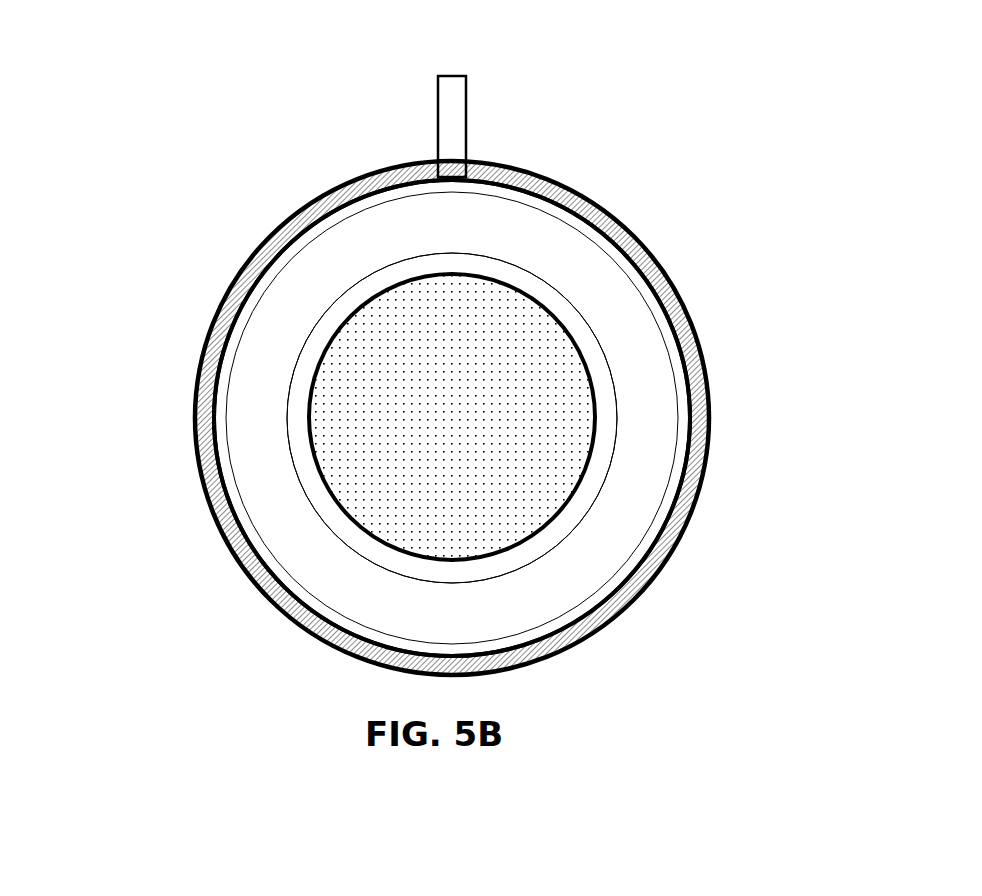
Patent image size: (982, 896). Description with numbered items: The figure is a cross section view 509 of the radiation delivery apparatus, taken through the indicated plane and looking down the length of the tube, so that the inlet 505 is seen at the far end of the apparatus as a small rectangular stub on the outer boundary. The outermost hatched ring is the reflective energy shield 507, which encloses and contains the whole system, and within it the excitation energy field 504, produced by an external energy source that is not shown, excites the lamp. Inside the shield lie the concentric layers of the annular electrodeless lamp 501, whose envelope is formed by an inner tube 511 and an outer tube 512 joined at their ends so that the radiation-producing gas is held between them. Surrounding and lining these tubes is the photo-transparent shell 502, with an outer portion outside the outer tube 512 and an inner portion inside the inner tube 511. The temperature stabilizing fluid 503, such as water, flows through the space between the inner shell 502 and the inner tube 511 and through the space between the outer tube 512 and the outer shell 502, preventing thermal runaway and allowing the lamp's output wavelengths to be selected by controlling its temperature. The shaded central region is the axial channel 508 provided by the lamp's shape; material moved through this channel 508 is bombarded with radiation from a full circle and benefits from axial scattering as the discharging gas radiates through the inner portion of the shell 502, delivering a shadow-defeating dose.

The electrodeless lamp 501 is at (377, 443).
The photo-transparent shell 502 is at (370, 292).
The fluid 503 is at (388, 277).
The excitation energy field 504 is at (525, 178).
The inlet 505 is at (450, 76).
The reflective energy shield 507 is at (712, 448).
The axial channel 508 is at (452, 413).
The cross section view 509 is at (467, 356).
The inner tube 511 is at (333, 530).
The outer tube 512 is at (260, 540).